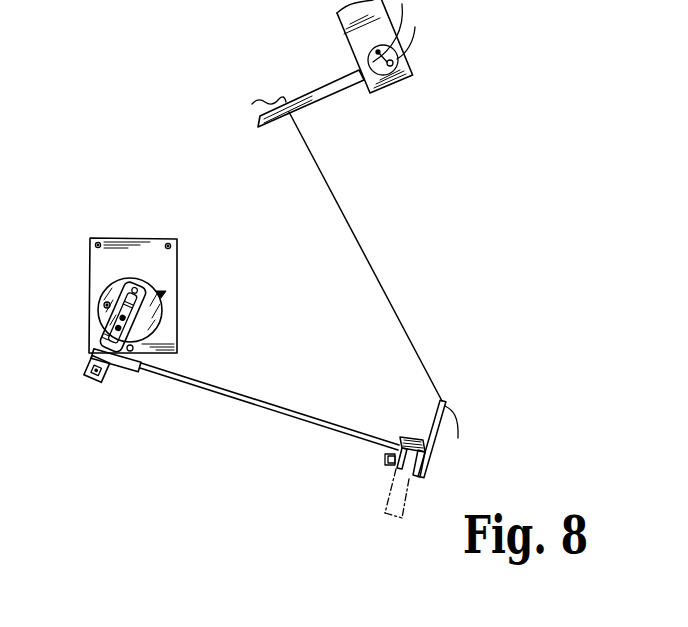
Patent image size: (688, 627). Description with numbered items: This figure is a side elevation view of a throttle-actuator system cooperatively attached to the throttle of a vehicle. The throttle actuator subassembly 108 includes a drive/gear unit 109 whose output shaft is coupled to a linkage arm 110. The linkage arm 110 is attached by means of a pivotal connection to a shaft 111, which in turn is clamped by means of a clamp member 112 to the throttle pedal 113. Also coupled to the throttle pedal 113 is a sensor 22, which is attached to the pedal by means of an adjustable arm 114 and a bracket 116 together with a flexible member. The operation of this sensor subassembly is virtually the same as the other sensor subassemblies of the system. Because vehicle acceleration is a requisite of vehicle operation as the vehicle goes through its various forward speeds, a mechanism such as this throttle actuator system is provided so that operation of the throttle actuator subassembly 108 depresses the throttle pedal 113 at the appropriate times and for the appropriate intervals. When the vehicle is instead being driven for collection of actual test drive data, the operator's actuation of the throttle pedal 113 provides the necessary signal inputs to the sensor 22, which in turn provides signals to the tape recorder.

The throttle actuator subassembly 108 is at (120, 168).
The drive/gear unit 109 is at (158, 313).
The linkage arm 110 is at (100, 336).
The shaft 111 is at (238, 397).
The clamp member 112 is at (409, 437).
The throttle pedal 113 is at (387, 505).
The adjustable arm 114 is at (323, 94).
The bracket 116 is at (431, 453).
The sensor 22 is at (404, 80).